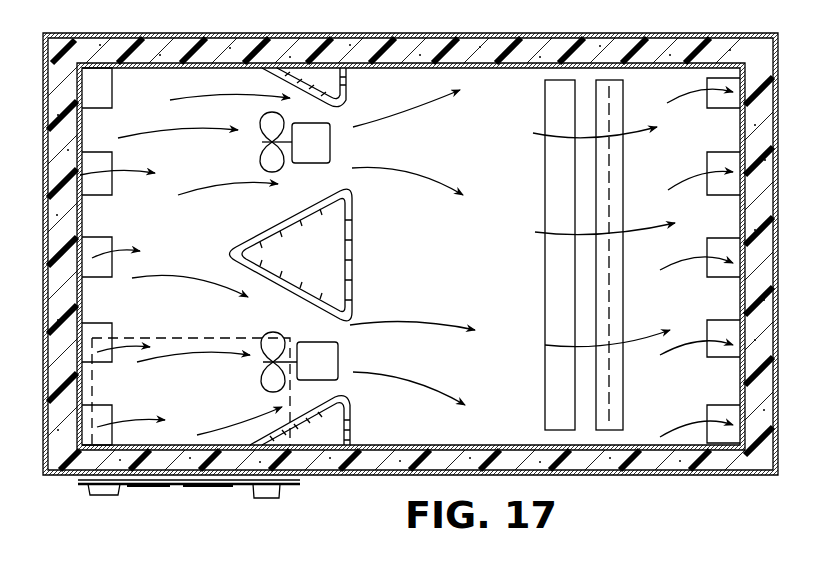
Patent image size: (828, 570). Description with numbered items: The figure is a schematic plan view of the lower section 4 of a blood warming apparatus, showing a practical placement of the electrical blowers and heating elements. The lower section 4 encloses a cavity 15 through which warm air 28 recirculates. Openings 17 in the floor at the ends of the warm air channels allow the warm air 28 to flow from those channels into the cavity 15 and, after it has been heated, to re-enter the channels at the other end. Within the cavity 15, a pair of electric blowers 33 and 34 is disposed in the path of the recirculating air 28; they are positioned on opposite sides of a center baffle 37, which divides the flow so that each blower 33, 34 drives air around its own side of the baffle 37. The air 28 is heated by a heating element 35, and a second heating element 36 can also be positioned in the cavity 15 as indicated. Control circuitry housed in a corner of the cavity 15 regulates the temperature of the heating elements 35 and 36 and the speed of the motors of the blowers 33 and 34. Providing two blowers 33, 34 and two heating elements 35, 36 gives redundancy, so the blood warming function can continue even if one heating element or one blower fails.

The lower section 4 is at (778, 230).
The cavity 15 is at (480, 244).
The opening 17 is at (98, 101).
The warm air 28 is at (212, 198).
The electric blower 33 is at (330, 148).
The electric blower 34 is at (338, 362).
The heating element 35 is at (563, 80).
The second heating element 36 is at (613, 80).
The center baffle 37 is at (351, 250).